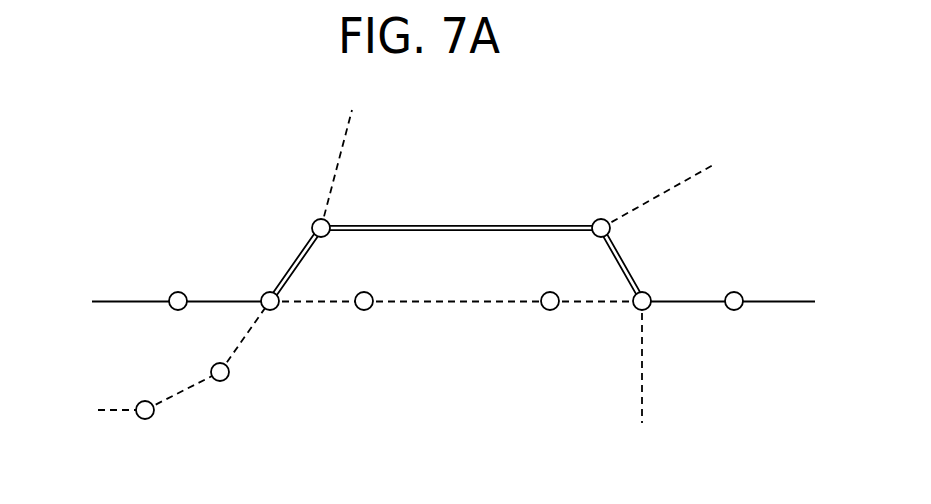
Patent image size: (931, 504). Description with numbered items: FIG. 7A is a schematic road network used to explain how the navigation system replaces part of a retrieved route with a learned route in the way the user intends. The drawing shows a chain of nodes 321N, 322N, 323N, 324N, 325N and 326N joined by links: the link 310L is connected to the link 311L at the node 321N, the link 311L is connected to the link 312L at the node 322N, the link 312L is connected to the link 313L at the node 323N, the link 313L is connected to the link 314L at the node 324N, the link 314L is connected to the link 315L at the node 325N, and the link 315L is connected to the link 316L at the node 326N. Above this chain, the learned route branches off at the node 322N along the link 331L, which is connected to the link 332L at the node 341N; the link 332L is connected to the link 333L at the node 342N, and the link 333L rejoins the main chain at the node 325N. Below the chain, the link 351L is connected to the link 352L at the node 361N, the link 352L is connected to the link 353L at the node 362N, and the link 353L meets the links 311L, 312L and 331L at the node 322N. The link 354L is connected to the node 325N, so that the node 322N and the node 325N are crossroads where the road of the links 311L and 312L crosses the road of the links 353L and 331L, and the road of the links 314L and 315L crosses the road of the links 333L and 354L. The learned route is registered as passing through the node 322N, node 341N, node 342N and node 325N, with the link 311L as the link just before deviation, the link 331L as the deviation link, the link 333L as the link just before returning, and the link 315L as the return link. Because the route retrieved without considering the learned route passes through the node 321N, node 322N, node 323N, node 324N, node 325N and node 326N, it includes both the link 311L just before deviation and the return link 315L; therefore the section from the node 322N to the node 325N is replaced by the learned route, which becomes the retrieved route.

The link 310L is at (105, 325).
The link 311L is at (222, 324).
The link 312L is at (317, 324).
The link 313L is at (457, 326).
The link 314L is at (588, 326).
The link 315L is at (688, 324).
The link 316L is at (774, 324).
The link 331L is at (283, 219).
The link 332L is at (461, 206).
The link 333L is at (662, 256).
The link 351L is at (104, 431).
The link 352L is at (184, 415).
The link 353L is at (266, 347).
The link 354L is at (698, 362).
The node 321N is at (200, 280).
The node 322N is at (239, 249).
The node 323N is at (394, 279).
The node 324N is at (565, 279).
The node 325N is at (673, 280).
The node 326N is at (764, 280).
The node 341N is at (357, 210).
The node 342N is at (606, 206).
The node 361N is at (150, 388).
The node 362N is at (253, 403).